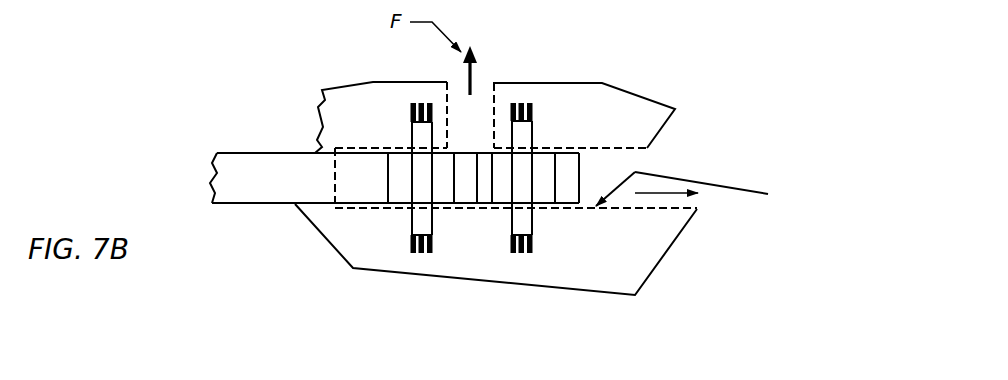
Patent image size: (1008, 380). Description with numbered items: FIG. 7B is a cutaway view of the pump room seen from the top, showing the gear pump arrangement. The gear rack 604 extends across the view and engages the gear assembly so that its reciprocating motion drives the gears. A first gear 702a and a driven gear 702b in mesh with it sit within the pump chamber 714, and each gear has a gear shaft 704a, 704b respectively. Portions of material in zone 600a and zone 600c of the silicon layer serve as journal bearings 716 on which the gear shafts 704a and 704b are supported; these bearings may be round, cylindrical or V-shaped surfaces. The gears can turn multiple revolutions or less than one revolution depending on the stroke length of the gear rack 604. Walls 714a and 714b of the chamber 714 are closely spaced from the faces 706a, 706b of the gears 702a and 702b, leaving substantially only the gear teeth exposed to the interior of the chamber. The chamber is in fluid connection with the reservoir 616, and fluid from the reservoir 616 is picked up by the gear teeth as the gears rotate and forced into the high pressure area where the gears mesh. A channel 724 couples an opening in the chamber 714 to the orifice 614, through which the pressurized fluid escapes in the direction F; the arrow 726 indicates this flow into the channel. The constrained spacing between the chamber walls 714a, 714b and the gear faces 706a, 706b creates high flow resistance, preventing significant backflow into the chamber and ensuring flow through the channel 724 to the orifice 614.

The gear rack 604 is at (213, 163).
The pump chamber 714 is at (350, 173).
The first gear 702a is at (402, 190).
The driven gear 702b is at (567, 190).
The gear shaft 704a is at (410, 222).
The gear shaft 704b is at (532, 222).
The journal bearings 716 is at (538, 103).
The gear face 706a is at (443, 212).
The gear face 706b is at (500, 212).
The orifice 614 is at (443, 79).
The zone of the silicon layer 600c is at (644, 97).
The insertion direction 726 is at (468, 146).
The channel 724 is at (480, 88).
The chamber wall 714a is at (603, 150).
The chamber wall 714b is at (731, 189).
The fluid reservoir 616 is at (670, 193).
The zone of the silicon layer 600a is at (676, 240).